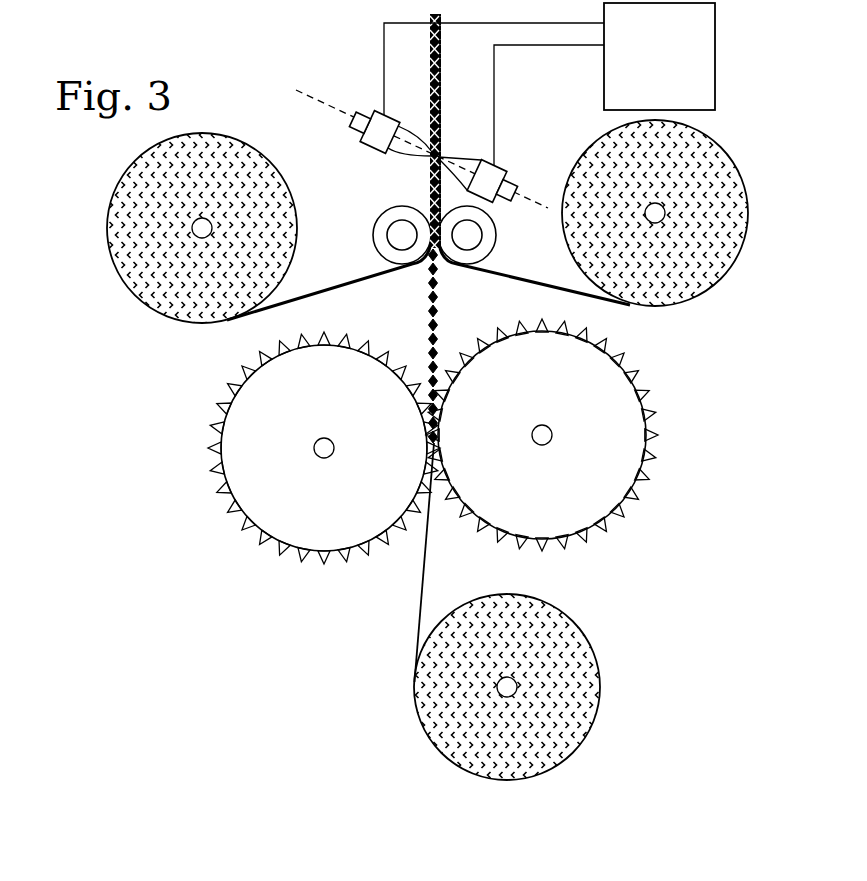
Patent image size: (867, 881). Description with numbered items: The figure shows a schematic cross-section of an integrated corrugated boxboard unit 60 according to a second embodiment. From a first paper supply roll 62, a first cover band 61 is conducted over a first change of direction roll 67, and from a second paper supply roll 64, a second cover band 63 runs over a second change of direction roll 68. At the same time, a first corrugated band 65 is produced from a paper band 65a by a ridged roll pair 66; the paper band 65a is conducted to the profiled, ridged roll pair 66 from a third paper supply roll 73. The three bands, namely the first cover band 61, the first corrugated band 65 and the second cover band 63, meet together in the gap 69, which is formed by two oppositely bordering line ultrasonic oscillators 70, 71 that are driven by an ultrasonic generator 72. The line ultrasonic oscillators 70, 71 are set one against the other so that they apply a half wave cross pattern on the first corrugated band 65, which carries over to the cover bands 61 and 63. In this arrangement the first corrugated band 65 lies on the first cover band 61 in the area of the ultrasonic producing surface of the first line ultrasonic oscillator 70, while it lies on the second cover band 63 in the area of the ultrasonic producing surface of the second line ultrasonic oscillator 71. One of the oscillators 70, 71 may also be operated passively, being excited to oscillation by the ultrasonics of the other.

The integrated corrugated boxboard unit 60 is at (133, 623).
The first cover band 61 is at (342, 290).
The first paper supply roll 62 is at (147, 278).
The second cover band 63 is at (503, 273).
The second paper supply roll 64 is at (722, 195).
The first corrugated band 65 is at (430, 328).
The paper band 65a is at (427, 583).
The ridged roll pair 66 is at (686, 427).
The first change of direction roll 67 is at (402, 209).
The second change of direction roll 68 is at (447, 232).
The gap 69 is at (456, 140).
The first line ultrasonic oscillator 70 is at (382, 122).
The second line ultrasonic oscillator 71 is at (487, 178).
The ultrasonic generator 72 is at (703, 88).
The third paper supply roll 73 is at (588, 692).